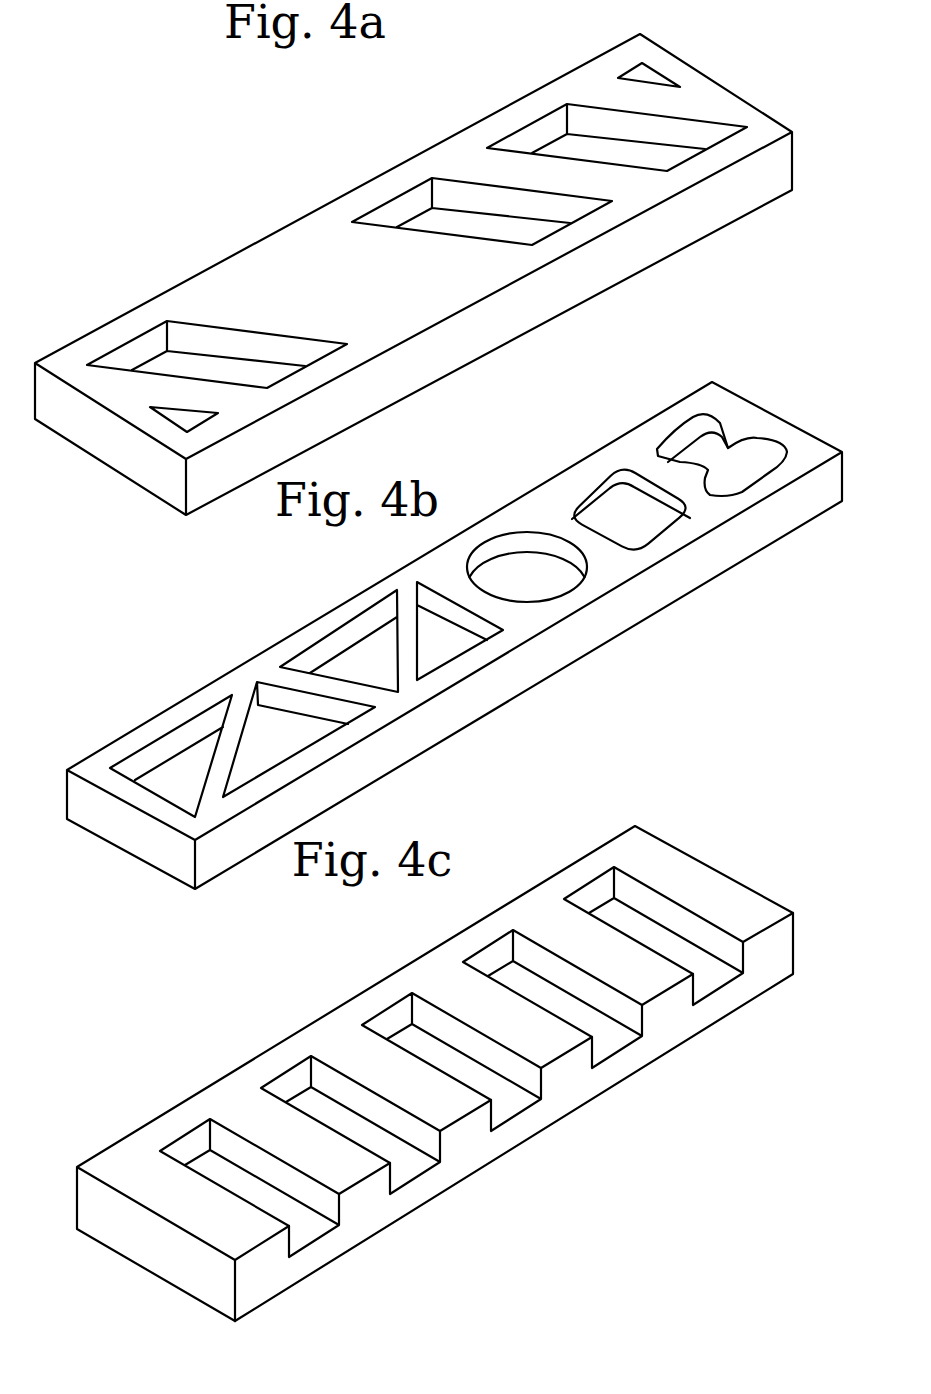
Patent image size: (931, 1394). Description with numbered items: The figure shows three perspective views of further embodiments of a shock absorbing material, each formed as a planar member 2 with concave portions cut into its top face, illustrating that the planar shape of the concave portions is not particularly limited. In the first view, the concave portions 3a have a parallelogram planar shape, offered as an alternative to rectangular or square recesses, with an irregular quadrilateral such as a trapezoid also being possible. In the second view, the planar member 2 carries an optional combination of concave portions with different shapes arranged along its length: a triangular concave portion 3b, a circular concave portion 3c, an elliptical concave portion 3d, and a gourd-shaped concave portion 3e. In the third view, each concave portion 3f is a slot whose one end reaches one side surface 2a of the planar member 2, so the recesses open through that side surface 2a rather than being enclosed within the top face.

In FIG. 4a, the planar member 2 is at (497, 320).
In FIG. 4b, the planar member 2 is at (648, 598).
In FIG. 4c, the planar member 2 is at (697, 878).
In FIG. 4c, the side surface 2a is at (768, 965).
In FIG. 4a, the concave portion 3a is at (575, 125).
In FIG. 4b, the triangular concave portion 3b is at (178, 750).
In FIG. 4b, the circular concave portion 3c is at (507, 567).
In FIG. 4b, the elliptical concave portion 3d is at (610, 508).
In FIG. 4b, the gourd-shaped concave portion 3e is at (730, 445).
In FIG. 4c, the concave portion 3f is at (400, 1018).